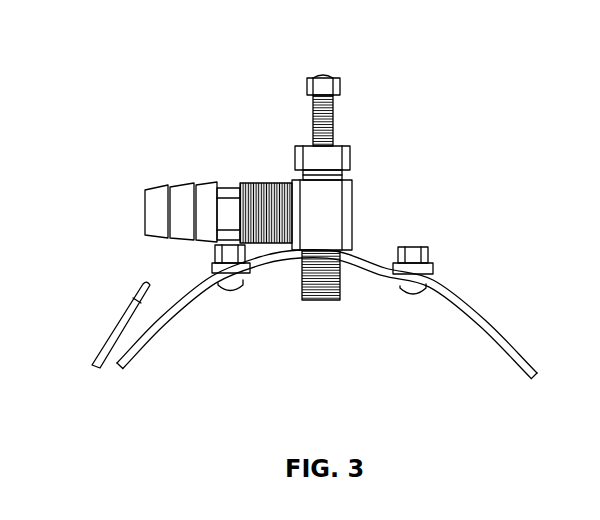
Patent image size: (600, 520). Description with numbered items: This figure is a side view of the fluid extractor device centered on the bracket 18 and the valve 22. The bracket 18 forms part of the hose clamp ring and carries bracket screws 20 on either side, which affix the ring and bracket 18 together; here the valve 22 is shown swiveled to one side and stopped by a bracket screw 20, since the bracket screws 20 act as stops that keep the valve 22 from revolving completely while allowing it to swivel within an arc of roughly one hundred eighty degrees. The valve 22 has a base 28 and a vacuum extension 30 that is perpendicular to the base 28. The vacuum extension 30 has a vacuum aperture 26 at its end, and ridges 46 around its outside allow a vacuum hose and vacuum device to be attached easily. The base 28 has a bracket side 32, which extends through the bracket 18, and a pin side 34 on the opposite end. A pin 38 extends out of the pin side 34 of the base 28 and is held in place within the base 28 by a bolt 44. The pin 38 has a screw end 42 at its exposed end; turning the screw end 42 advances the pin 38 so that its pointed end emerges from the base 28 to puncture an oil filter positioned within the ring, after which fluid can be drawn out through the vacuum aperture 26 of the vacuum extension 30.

The bracket 18 is at (260, 278).
The bracket screws 20 is at (212, 263).
The valve 22 is at (156, 78).
The vacuum aperture 26 is at (136, 219).
The base 28 is at (345, 217).
The vacuum extension 30 is at (152, 200).
The bracket side 32 is at (378, 292).
The pin side 34 is at (352, 173).
The pin 38 is at (313, 122).
The screw end 42 is at (340, 88).
The bolt 44 is at (295, 160).
The ridges 46 is at (178, 185).